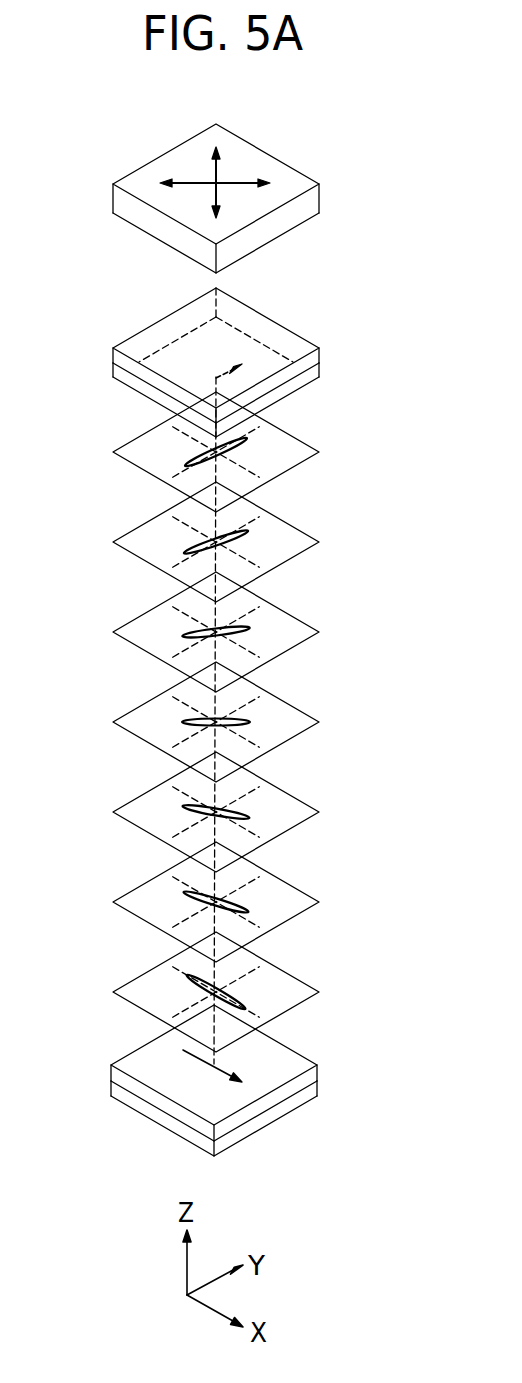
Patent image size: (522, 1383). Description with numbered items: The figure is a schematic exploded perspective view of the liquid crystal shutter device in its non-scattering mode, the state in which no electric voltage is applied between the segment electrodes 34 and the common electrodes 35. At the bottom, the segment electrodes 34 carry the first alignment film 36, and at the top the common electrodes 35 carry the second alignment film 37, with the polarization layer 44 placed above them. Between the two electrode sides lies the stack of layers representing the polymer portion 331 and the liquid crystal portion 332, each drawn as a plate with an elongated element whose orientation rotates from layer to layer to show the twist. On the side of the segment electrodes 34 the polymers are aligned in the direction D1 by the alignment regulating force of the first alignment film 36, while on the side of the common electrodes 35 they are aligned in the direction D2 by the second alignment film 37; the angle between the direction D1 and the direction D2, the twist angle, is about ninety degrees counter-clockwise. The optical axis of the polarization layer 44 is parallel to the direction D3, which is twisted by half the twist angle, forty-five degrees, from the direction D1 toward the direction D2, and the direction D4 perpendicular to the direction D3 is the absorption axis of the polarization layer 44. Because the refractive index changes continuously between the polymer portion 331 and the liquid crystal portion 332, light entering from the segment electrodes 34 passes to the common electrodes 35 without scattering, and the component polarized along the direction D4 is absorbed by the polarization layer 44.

The polarization layer 44 is at (312, 202).
The common electrodes 35 is at (313, 358).
The second alignment film 37 is at (313, 372).
The polymer portion 331 is at (332, 435).
The liquid crystal portion 332 is at (332, 695).
The first alignment film 36 is at (313, 1078).
The segment electrodes 34 is at (313, 1090).
The direction D1 is at (197, 1058).
The direction D2 is at (216, 380).
The direction D3 is at (197, 183).
The direction D4 is at (217, 172).